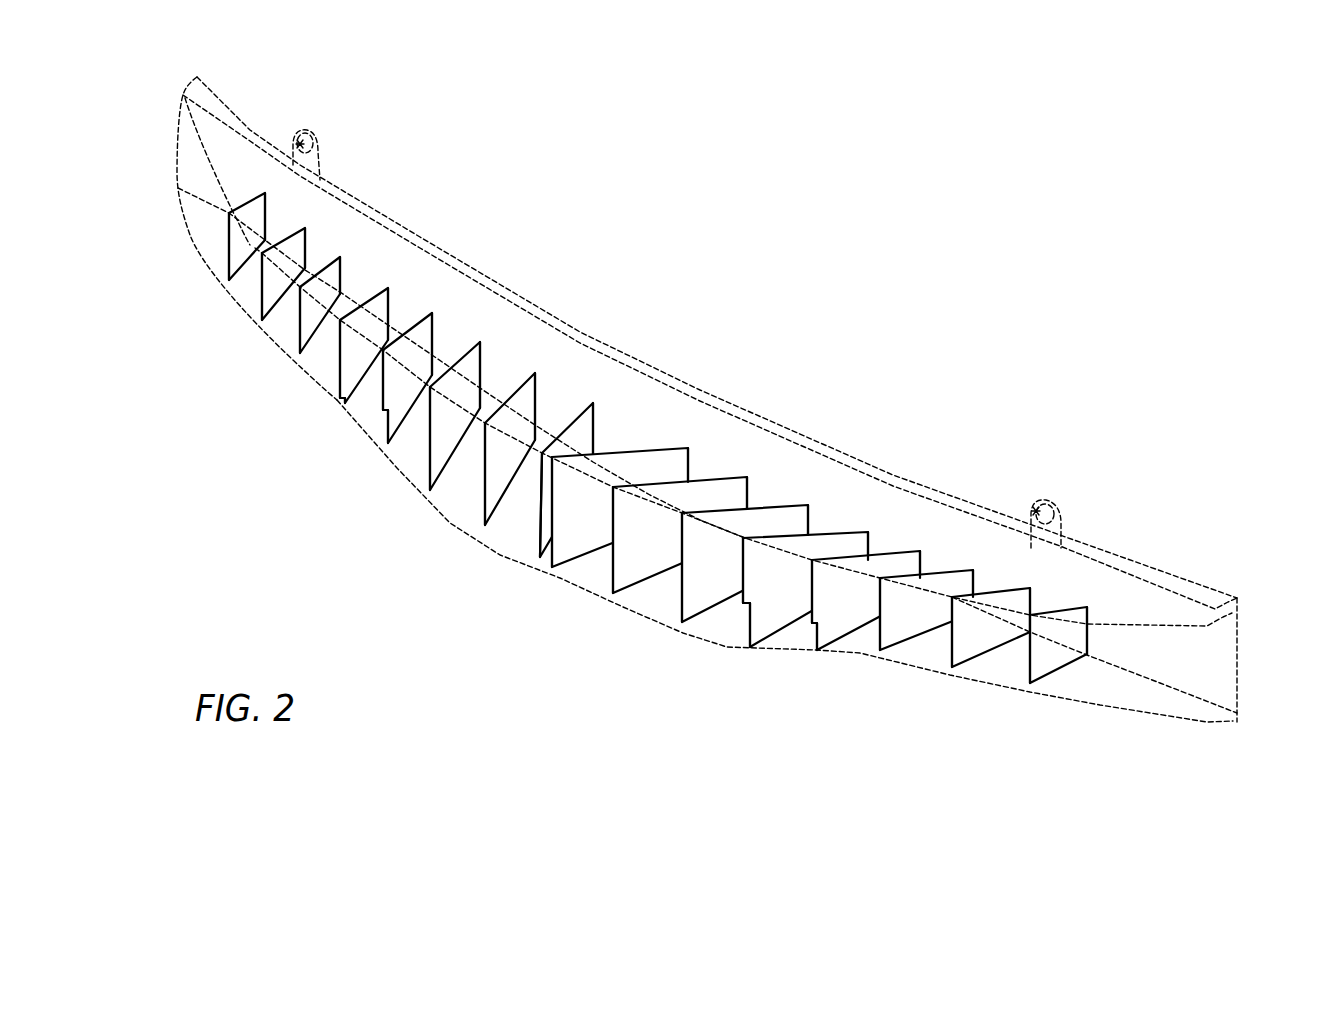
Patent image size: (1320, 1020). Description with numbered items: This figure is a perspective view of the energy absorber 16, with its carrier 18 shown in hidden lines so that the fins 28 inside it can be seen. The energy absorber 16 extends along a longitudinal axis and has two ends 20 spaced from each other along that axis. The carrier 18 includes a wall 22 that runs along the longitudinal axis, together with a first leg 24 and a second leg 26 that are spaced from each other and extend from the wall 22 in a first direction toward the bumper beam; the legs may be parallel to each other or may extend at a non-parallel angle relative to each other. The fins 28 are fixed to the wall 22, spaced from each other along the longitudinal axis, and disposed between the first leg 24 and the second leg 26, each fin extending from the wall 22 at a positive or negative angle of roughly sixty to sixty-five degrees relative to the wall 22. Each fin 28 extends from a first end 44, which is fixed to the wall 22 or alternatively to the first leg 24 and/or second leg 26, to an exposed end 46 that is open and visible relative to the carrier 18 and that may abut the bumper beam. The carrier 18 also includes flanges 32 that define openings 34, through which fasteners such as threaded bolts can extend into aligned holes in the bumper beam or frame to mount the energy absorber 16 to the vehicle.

The energy absorber 16 is at (697, 427).
The carrier 18 is at (697, 393).
The ends 20 is at (183, 113).
The wall 22 is at (520, 523).
The first leg 24 is at (568, 370).
The second leg 26 is at (1117, 700).
The fins 28 is at (614, 460).
The flanges 32 is at (698, 315).
The openings 34 is at (300, 143).
The first end 44 is at (340, 276).
The exposed end 46 is at (389, 317).